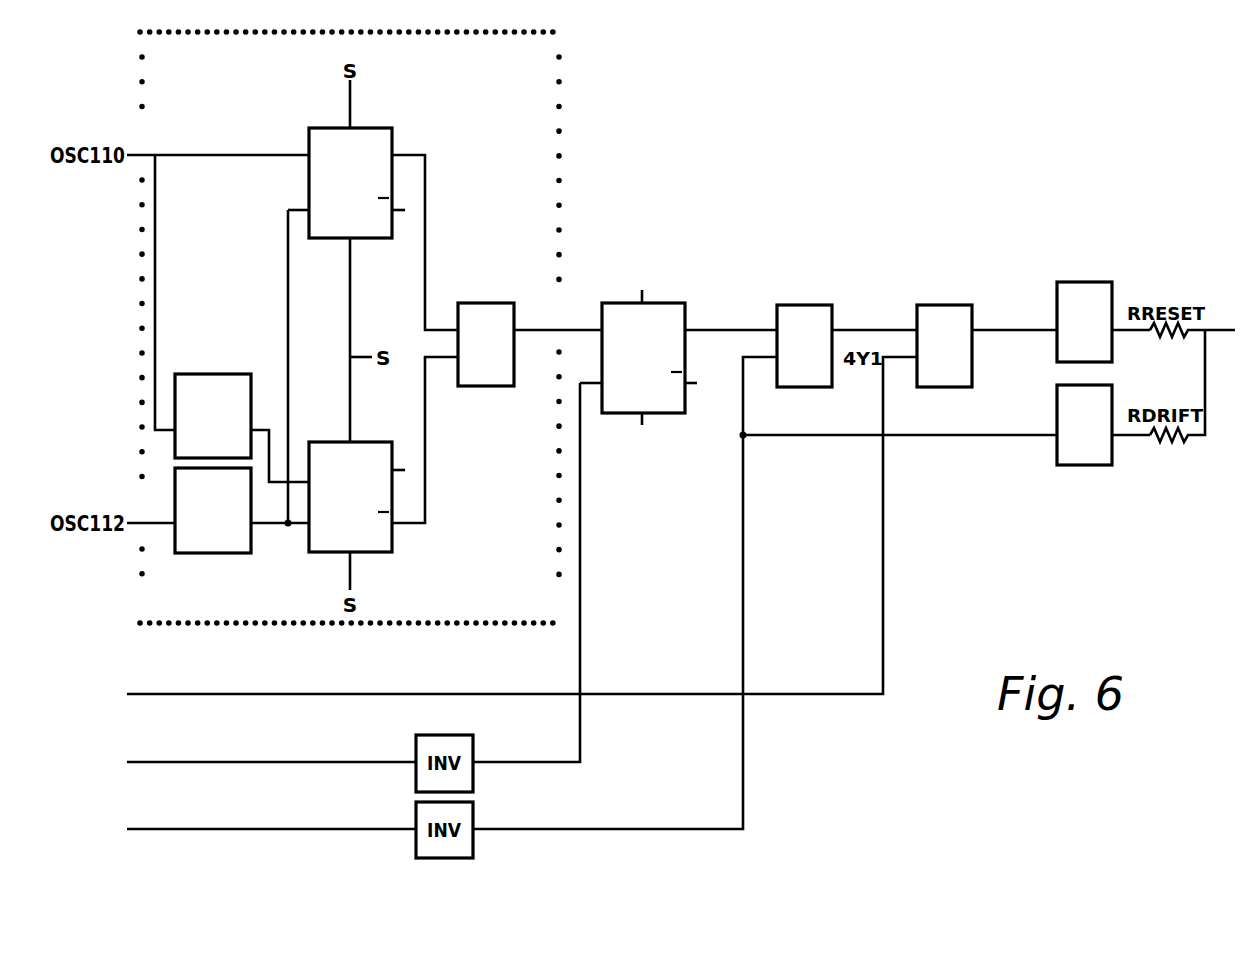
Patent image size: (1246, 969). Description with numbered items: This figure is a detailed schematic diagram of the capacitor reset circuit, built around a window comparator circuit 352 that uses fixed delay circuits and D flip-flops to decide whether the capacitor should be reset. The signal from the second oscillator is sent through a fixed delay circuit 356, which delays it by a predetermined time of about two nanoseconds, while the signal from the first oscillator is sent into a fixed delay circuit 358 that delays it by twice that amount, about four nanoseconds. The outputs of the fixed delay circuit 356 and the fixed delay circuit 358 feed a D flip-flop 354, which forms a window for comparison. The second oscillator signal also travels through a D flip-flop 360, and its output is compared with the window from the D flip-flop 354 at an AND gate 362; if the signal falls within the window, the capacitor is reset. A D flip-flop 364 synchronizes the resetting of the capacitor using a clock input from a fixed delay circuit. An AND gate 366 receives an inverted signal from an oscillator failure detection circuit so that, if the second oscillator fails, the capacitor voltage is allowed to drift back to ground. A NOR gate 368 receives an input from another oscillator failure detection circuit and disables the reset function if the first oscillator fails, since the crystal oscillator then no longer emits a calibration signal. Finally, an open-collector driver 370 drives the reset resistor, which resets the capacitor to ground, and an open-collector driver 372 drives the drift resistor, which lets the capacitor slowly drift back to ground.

The window comparator circuit 352 is at (561, 82).
The D flip-flop 354 is at (356, 442).
The fixed delay circuit 356 is at (220, 553).
The fixed delay circuit 358 is at (218, 374).
The D flip-flop 360 is at (356, 128).
The AND gate 362 is at (482, 303).
The D flip-flop 364 is at (660, 303).
The AND gate 366 is at (808, 305).
The NOR gate 368 is at (945, 305).
The open-collector driver 370 is at (1092, 282).
The open-collector driver 372 is at (1092, 465).